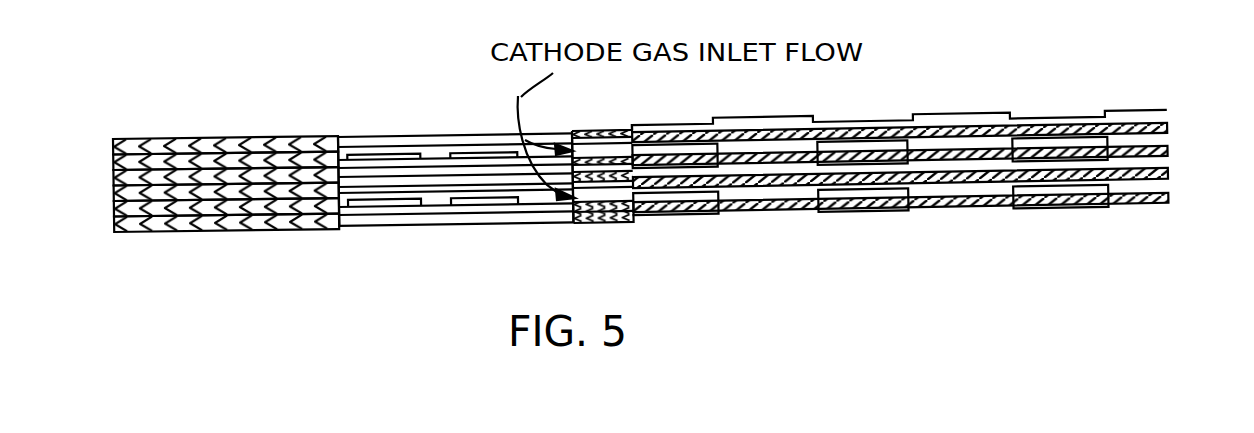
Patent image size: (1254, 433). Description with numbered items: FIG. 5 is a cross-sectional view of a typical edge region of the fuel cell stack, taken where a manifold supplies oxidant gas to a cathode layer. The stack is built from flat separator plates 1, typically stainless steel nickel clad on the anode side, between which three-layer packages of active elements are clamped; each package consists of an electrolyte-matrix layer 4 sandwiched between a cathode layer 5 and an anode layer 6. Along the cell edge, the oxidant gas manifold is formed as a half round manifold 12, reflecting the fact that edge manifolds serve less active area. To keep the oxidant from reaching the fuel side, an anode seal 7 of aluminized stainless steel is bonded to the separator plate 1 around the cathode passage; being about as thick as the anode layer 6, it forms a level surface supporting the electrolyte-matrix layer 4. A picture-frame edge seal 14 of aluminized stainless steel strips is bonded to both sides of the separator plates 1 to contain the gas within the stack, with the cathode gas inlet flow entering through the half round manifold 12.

The separator plate 1 is at (112, 170).
The electrolyte-matrix layer 4 is at (112, 145).
The cathode layer 5 is at (1167, 185).
The anode layer 6 is at (1168, 162).
The anode seal 7 is at (594, 173).
The half round manifold 12 is at (408, 142).
The edge seal 14 is at (112, 160).